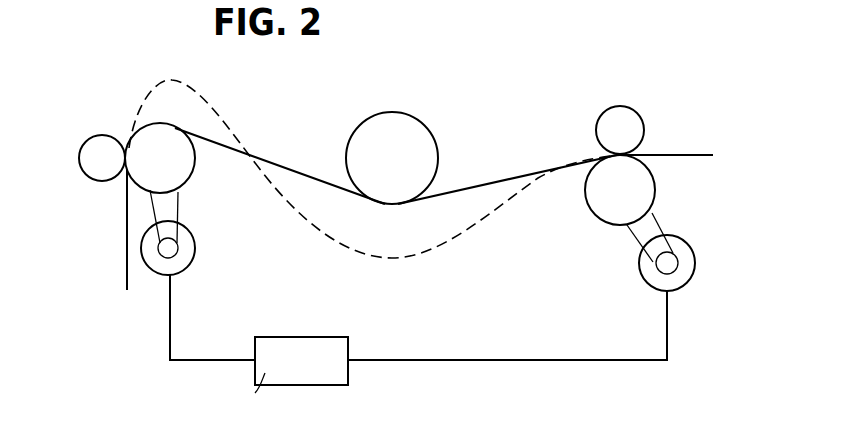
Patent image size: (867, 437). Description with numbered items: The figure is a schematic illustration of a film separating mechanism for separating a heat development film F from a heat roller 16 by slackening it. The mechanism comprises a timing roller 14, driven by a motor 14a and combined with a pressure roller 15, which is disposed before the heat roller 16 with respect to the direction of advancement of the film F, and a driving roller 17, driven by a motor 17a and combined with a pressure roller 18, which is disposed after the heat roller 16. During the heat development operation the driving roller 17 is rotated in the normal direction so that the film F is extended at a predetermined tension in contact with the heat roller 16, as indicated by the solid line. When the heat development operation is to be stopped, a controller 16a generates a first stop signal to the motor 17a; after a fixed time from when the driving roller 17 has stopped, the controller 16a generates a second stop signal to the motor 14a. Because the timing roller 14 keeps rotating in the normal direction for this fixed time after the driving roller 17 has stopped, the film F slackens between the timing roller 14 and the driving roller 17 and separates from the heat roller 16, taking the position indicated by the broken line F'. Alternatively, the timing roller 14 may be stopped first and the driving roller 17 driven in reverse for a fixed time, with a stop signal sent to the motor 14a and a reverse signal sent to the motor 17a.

The timing roller 14 is at (178, 170).
The motor 14a is at (187, 260).
The pressure roller 15 is at (86, 165).
The heat roller 16 is at (413, 140).
The controller 16a is at (315, 377).
The driving roller 17 is at (615, 217).
The motor 17a is at (647, 280).
The pressure roller 18 is at (625, 122).
The film F is at (444, 140).
The slackened film F' is at (373, 188).